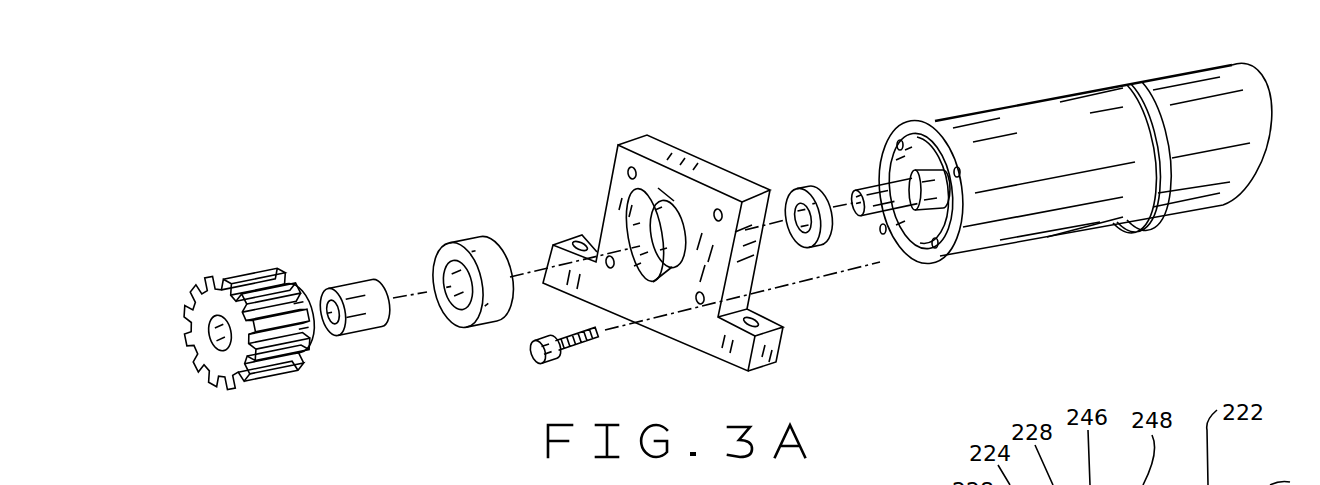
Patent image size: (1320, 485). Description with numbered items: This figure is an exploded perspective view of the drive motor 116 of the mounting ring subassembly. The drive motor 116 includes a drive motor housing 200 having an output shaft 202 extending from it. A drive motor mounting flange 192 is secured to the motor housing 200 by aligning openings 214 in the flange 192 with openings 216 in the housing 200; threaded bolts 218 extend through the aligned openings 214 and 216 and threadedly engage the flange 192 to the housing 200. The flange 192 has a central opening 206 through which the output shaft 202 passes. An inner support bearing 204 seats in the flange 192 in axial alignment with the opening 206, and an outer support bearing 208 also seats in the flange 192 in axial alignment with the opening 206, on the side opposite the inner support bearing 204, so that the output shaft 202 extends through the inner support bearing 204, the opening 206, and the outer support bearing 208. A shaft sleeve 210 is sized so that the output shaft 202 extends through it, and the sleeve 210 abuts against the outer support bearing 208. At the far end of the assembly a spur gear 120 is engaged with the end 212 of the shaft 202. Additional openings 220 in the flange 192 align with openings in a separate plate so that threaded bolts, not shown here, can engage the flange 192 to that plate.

The spur gear 120 is at (240, 385).
The shaft sleeve 210 is at (357, 283).
The outer support bearing 208 is at (490, 245).
The opening 206 is at (645, 214).
The openings 214 is at (627, 165).
The threaded bolts 218 is at (548, 362).
The openings 220 is at (762, 314).
The drive motor mounting flange 192 is at (763, 357).
The inner support bearing 204 is at (822, 187).
The output shaft 202 is at (873, 188).
The end 212 is at (857, 216).
The openings 216 is at (900, 140).
The drive motor housing 200 is at (1102, 192).
The drive motor 116 is at (1047, 252).